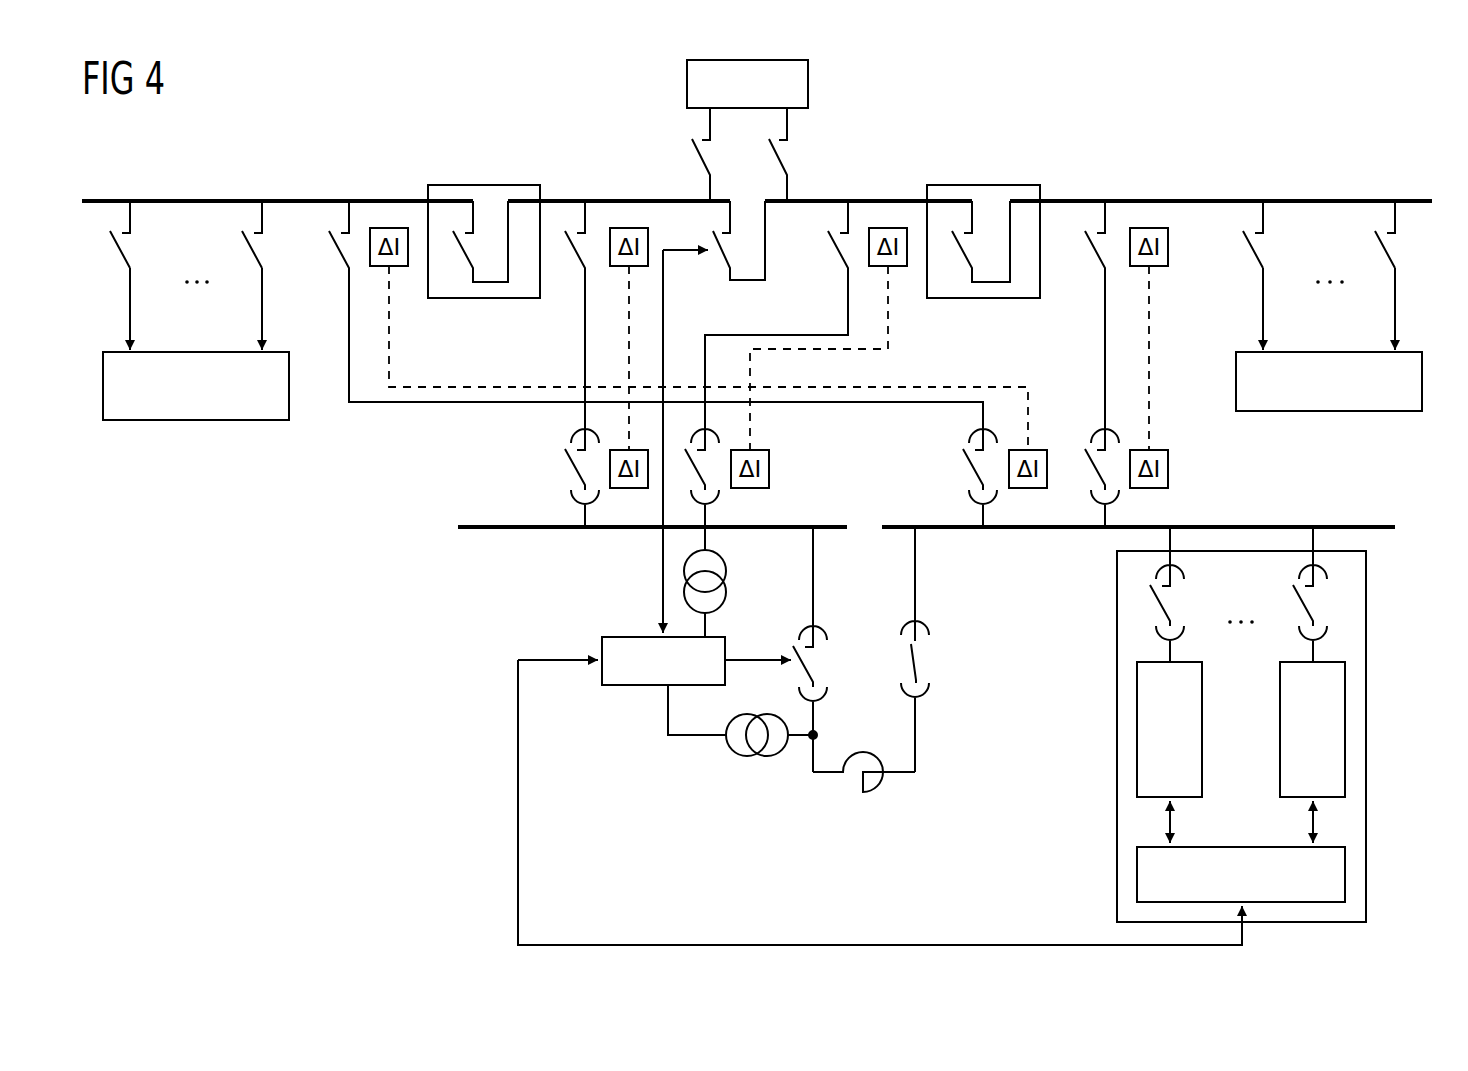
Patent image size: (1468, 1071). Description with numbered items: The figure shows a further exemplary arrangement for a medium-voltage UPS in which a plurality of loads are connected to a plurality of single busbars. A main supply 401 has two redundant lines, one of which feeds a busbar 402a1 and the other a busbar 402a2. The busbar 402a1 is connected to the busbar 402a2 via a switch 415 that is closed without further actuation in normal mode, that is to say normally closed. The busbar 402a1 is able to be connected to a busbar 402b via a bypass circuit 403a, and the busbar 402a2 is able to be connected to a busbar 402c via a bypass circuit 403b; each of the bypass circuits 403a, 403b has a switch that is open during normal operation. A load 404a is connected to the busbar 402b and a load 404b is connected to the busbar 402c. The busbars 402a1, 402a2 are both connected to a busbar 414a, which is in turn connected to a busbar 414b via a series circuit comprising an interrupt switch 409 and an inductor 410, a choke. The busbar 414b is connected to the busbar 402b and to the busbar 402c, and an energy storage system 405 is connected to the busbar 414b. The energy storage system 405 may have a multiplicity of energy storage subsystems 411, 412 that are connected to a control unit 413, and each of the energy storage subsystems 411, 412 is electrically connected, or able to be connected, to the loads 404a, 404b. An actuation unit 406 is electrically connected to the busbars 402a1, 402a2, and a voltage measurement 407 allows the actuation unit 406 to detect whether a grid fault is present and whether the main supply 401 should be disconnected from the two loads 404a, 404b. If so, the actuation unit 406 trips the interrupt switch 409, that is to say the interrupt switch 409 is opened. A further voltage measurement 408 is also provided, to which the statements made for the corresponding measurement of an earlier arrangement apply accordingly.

The main supply 401 is at (808, 82).
The busbar 402b is at (232, 200).
The busbar 402a1 is at (572, 200).
The busbar 402a2 is at (900, 200).
The busbar 402c is at (1328, 198).
The bypass circuit 403a is at (488, 184).
The bypass circuit 403b is at (988, 184).
The switch 415 is at (708, 238).
The load 404a is at (177, 422).
The load 404b is at (1277, 412).
The busbar 414a is at (488, 525).
The busbar 414b is at (1378, 524).
The energy storage system 405 is at (1253, 724).
The actuation unit 406 is at (627, 688).
The voltage measurement 407 is at (728, 590).
The voltage measurement 408 is at (748, 757).
The interrupt switch 409 is at (815, 657).
The inductor 410 is at (877, 783).
The energy storage subsystem 411 is at (1137, 722).
The energy storage subsystem 412 is at (1345, 720).
The control unit 413 is at (1137, 872).